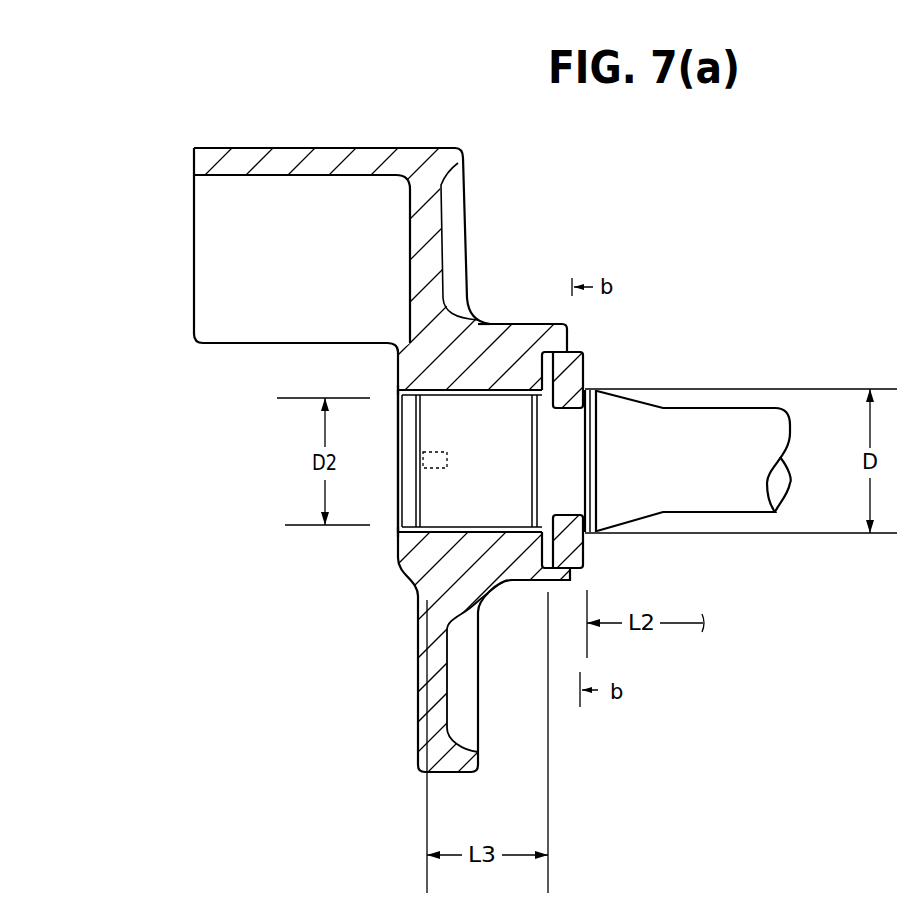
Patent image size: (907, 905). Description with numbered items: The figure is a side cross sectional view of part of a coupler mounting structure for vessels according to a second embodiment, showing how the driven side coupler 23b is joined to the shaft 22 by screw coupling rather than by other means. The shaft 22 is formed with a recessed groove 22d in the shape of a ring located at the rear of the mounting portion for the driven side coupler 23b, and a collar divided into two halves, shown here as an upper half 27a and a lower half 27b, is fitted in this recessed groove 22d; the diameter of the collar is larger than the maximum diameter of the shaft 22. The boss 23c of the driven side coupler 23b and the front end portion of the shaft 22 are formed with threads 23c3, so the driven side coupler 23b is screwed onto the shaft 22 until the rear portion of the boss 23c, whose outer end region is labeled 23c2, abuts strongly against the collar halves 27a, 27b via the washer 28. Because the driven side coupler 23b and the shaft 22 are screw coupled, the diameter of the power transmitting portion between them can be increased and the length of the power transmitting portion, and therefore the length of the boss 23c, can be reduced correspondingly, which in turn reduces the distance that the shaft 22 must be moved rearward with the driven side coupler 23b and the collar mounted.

The driven side coupler 23b is at (248, 148).
The boss 23c is at (469, 484).
The outer end portion of boss 23c2 is at (507, 352).
The threads 23c3 is at (408, 543).
The washer 28 is at (580, 437).
The upper section of stopper ring 27a is at (565, 377).
The lower section of stopper ring 27b is at (574, 556).
The shaft 22 is at (617, 461).
The recessed groove 22d is at (567, 466).